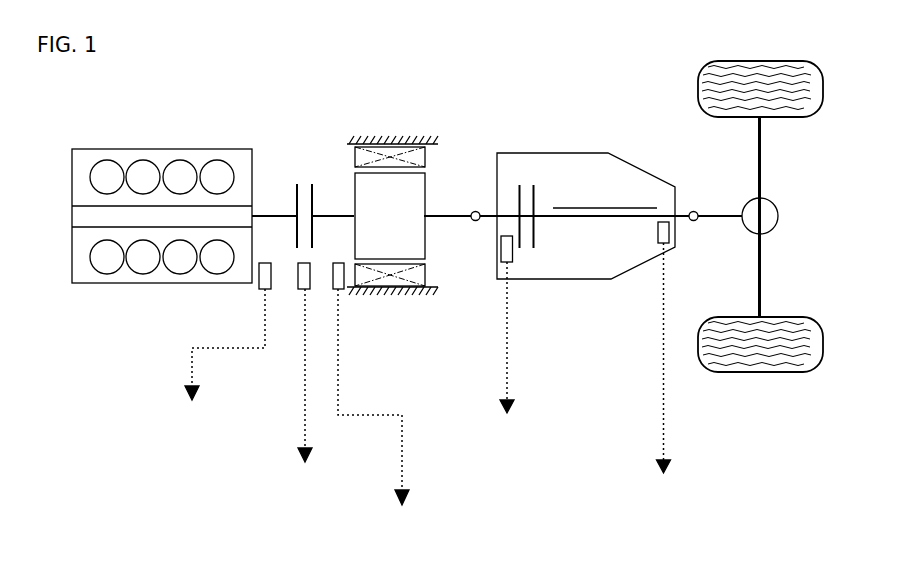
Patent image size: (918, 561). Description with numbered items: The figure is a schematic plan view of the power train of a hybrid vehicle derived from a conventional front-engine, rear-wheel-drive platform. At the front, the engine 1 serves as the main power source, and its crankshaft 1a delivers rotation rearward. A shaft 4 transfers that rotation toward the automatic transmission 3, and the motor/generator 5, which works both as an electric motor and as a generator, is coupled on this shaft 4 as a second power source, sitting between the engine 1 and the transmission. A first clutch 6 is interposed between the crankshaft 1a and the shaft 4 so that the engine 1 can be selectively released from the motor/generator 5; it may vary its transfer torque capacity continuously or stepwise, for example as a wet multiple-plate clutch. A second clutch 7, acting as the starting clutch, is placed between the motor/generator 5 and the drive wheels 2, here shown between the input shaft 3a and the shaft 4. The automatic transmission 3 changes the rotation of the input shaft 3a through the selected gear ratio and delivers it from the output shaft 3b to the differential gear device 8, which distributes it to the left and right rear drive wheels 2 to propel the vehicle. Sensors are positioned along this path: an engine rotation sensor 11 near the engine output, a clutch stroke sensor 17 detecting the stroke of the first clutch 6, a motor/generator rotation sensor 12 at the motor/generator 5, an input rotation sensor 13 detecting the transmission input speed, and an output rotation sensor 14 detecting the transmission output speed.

The engine 1 is at (122, 146).
The crankshaft 1a is at (276, 213).
The drive wheels 2 is at (781, 60).
The automatic transmission 3 is at (593, 151).
The input shaft 3a is at (488, 212).
The output shaft 3b is at (682, 212).
The shaft 4 is at (442, 212).
The motor/generator 5 is at (381, 134).
The first clutch 6 is at (305, 181).
The second clutch 7 is at (526, 182).
The differential gear device 8 is at (774, 199).
The engine rotation sensor 11 is at (258, 286).
The motor/generator rotation sensor 12 is at (344, 292).
The input rotation sensor 13 is at (500, 254).
The output rotation sensor 14 is at (657, 232).
The clutch stroke sensor 17 is at (309, 291).